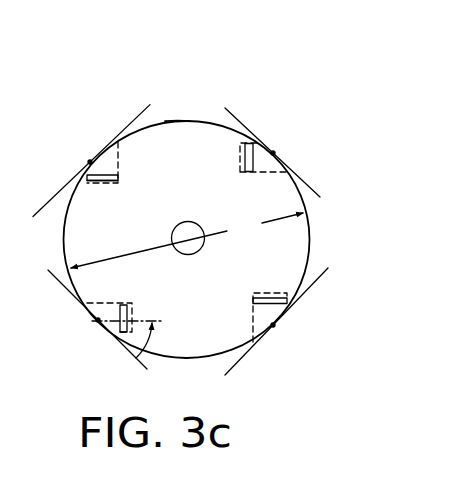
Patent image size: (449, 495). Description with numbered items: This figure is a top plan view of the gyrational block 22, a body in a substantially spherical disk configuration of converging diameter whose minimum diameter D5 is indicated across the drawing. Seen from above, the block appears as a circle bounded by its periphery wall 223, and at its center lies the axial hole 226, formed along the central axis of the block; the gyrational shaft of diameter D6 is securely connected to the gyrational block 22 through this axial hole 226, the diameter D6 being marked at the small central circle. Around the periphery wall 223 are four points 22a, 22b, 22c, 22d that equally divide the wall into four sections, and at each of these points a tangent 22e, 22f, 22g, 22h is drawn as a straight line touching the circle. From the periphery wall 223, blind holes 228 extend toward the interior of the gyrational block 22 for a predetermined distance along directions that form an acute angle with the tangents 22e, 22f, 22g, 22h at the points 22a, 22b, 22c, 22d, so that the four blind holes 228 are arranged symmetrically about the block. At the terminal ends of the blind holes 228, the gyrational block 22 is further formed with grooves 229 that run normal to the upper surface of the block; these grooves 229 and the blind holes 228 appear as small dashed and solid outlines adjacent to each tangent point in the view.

The gyrational block 22 is at (164, 117).
The periphery wall 223 is at (188, 120).
The tangent 22f is at (137, 115).
The tangent 22e is at (241, 121).
The tangent 22g is at (67, 287).
The tangent 22h is at (242, 357).
The point 22a is at (273, 153).
The point 22b is at (90, 162).
The point 22c is at (98, 321).
The point 22d is at (273, 326).
The blind holes 228 is at (90, 164).
The grooves 229 is at (89, 182).
The axial hole 226 is at (180, 251).
The minimum diameter D5 is at (187, 240).
The diameter of the gyrational shaft D6 is at (178, 221).